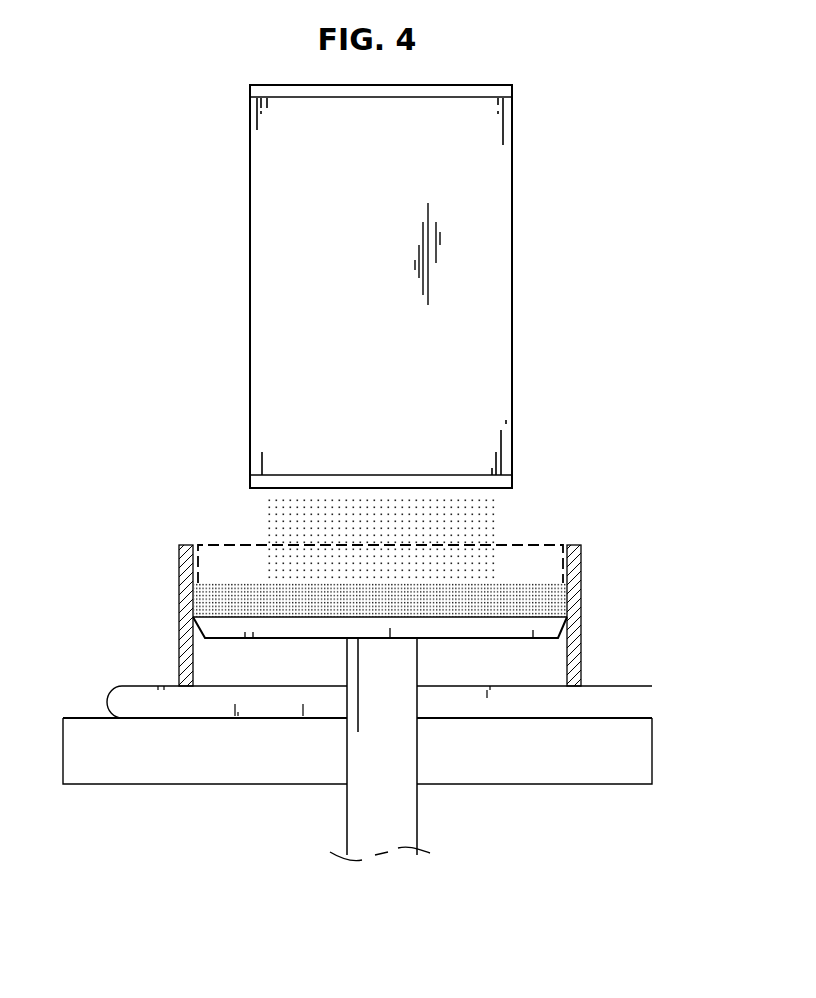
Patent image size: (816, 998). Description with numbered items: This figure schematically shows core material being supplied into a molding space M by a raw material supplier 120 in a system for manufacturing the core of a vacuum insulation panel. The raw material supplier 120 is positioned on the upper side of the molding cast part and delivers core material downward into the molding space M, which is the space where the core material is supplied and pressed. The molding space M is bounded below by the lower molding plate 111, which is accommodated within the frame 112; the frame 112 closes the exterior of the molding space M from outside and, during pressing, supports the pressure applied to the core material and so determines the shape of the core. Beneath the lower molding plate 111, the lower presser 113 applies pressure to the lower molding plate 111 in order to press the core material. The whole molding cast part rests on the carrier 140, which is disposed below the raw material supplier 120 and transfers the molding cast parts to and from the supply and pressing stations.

The raw material supplier 120 is at (497, 329).
The molding space M is at (545, 545).
The lower molding plate 111 is at (553, 627).
The frame 112 is at (575, 660).
The lower presser 113 is at (405, 816).
The carrier 140 is at (200, 765).